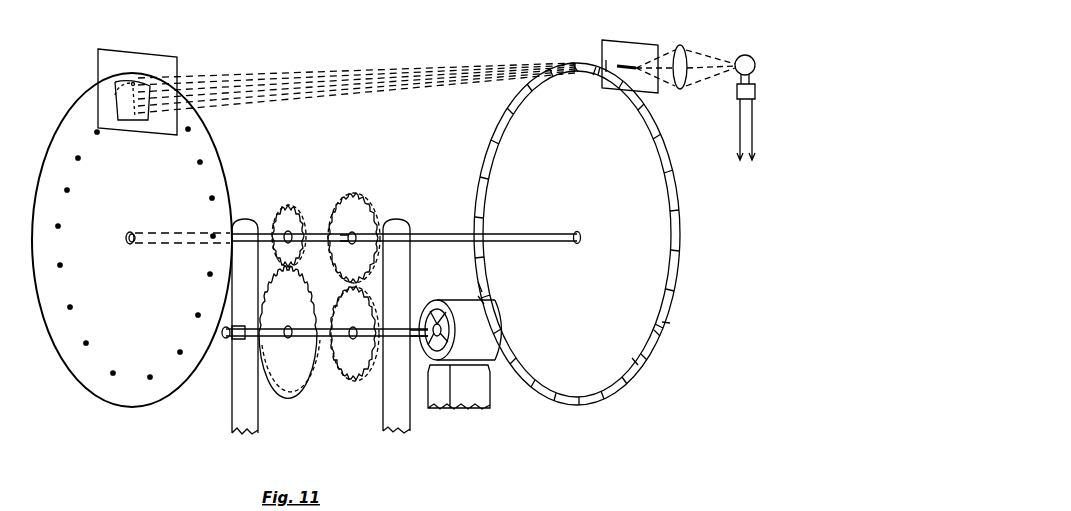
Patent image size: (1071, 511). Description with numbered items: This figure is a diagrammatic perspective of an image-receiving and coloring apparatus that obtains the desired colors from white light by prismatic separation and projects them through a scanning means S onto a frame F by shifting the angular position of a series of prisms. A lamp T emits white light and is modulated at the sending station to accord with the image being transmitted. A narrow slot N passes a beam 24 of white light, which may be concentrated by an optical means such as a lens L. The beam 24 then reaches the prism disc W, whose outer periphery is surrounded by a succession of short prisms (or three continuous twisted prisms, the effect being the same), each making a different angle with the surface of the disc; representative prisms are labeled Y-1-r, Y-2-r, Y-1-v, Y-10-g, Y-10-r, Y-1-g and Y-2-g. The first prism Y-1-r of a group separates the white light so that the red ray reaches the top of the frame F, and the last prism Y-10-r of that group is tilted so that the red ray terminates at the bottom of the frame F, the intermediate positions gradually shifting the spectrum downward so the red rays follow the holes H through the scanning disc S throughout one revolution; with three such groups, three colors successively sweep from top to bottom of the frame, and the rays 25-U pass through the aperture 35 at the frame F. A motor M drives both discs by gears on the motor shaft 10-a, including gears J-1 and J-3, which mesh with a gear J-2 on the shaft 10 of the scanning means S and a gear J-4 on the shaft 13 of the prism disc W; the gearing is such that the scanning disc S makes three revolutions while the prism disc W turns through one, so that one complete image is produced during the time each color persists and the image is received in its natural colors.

The scanning disc S is at (80, 350).
The holes in disc H is at (179, 351).
The frame F is at (150, 92).
The aperture 35 is at (133, 84).
The light rays 25-U is at (294, 88).
The shaft of the scanning means 10 is at (232, 226).
The shaft of the prism disc 13 is at (427, 233).
The motor shaft 10-a is at (336, 360).
The gear J-2 is at (290, 209).
The gear J-4 is at (361, 207).
The gear J-3 is at (288, 385).
The gear J-1 is at (363, 376).
The motor M is at (469, 376).
The prism disc W is at (602, 368).
The prism Y-1-r is at (584, 73).
The rim segment Y-2-r is at (607, 85).
The rim segment Y-1-v is at (486, 290).
The rim segment Y-10-g is at (483, 302).
The prism Y-10-r is at (661, 323).
The rim segment Y-1-g is at (653, 333).
The rim segment Y-2-g is at (633, 364).
The narrow slot N is at (636, 48).
The beam of white light 24 is at (607, 66).
The lens L is at (681, 49).
The lamp T is at (746, 56).